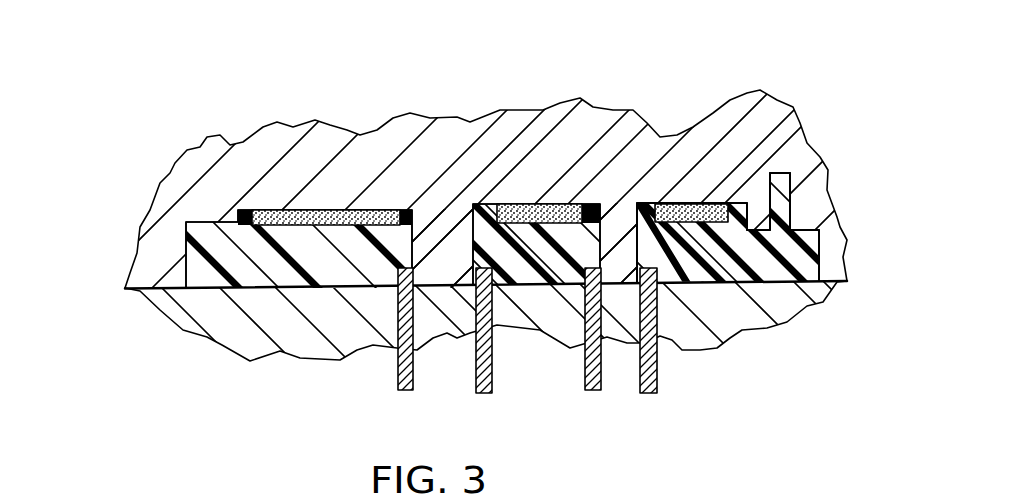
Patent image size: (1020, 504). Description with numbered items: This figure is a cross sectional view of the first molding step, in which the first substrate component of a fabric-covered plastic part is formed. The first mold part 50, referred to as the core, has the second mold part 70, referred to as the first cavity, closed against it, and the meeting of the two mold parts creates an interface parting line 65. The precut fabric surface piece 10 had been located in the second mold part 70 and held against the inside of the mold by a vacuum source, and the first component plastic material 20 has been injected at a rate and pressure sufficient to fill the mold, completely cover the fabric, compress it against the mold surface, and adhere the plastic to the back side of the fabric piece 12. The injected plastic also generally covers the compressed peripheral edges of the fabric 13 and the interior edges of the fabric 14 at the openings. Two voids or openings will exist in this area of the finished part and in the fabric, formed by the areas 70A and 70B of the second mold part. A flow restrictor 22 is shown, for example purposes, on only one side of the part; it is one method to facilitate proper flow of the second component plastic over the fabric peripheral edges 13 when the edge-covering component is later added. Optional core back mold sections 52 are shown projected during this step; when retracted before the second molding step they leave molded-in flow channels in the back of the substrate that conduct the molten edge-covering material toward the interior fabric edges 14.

The fabric surface piece 10 is at (287, 212).
The back side of the fabric piece 12 is at (681, 258).
The peripheral edges of the fabric 13 is at (738, 238).
The interior edges of the fabric 14 is at (446, 253).
The first component plastic material 20 is at (262, 258).
The flow restrictor 22 is at (790, 173).
The first mold part 50 is at (307, 330).
The core back mold sections 52 is at (407, 391).
The interface parting line 65 is at (140, 258).
The second mold part 70 is at (373, 152).
The area of the second mold part 70A is at (485, 205).
The area of the second mold part 70B is at (665, 203).